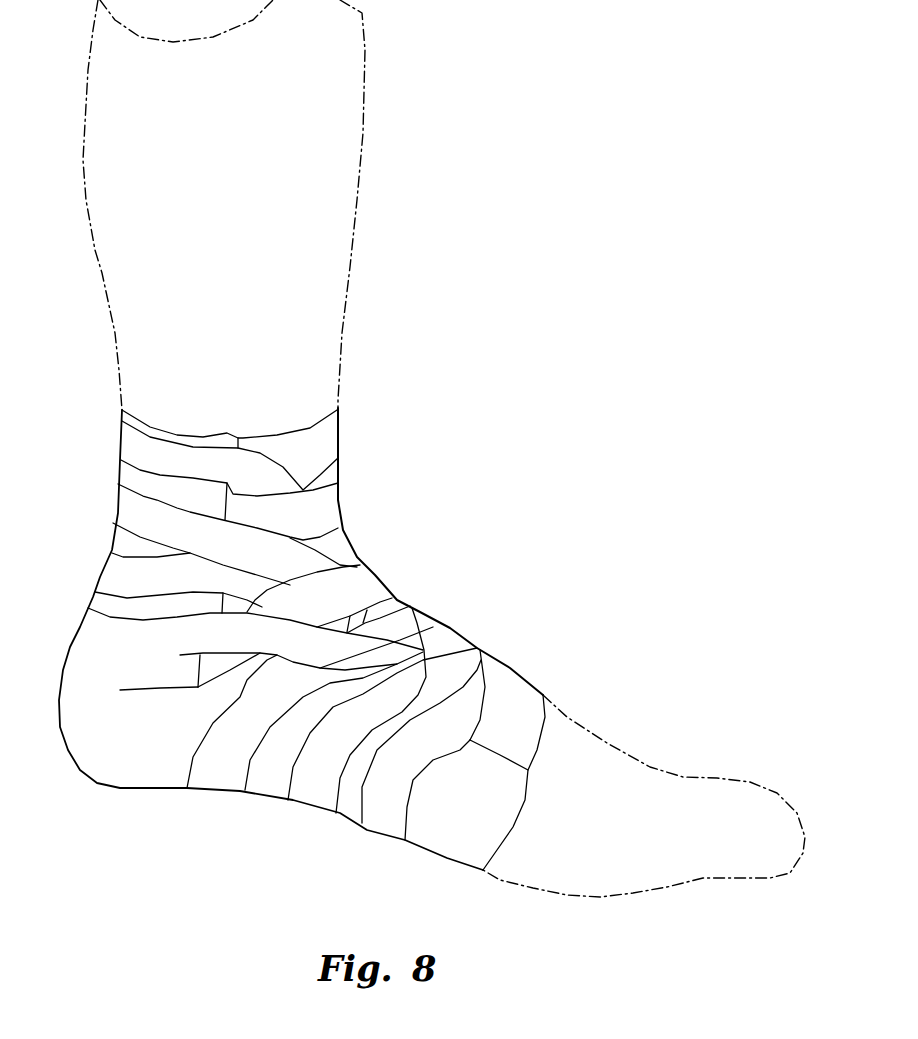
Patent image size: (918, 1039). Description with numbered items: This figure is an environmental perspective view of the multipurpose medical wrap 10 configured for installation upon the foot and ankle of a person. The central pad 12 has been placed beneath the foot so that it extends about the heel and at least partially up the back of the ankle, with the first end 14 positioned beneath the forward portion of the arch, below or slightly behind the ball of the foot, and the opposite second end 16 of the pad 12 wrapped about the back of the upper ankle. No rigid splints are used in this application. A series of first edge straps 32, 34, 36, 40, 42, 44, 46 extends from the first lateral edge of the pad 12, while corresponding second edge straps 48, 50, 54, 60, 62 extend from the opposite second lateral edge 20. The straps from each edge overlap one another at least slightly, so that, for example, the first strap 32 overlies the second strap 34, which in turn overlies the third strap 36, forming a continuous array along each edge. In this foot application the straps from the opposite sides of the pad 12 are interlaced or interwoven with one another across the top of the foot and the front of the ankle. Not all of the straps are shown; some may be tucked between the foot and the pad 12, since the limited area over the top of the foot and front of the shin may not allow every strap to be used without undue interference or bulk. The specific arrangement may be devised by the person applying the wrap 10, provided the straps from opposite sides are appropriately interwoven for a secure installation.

The multipurpose medical wrap 10 is at (470, 814).
The central pad 12 is at (259, 640).
The first end 14 is at (532, 805).
The second end 16 is at (229, 402).
The second lateral edge 20 is at (292, 629).
The first edge strap 32 is at (421, 785).
The first edge strap 34 is at (382, 761).
The first edge strap 36 is at (301, 751).
The first edge strap 40 is at (227, 611).
The first edge strap 42 is at (168, 554).
The first edge strap 44 is at (195, 499).
The first edge strap 46 is at (150, 427).
The second edge strap 48 is at (453, 589).
The second edge strap 50 is at (422, 702).
The second edge strap 54 is at (337, 570).
The second edge strap 60 is at (318, 478).
The second edge strap 62 is at (321, 440).